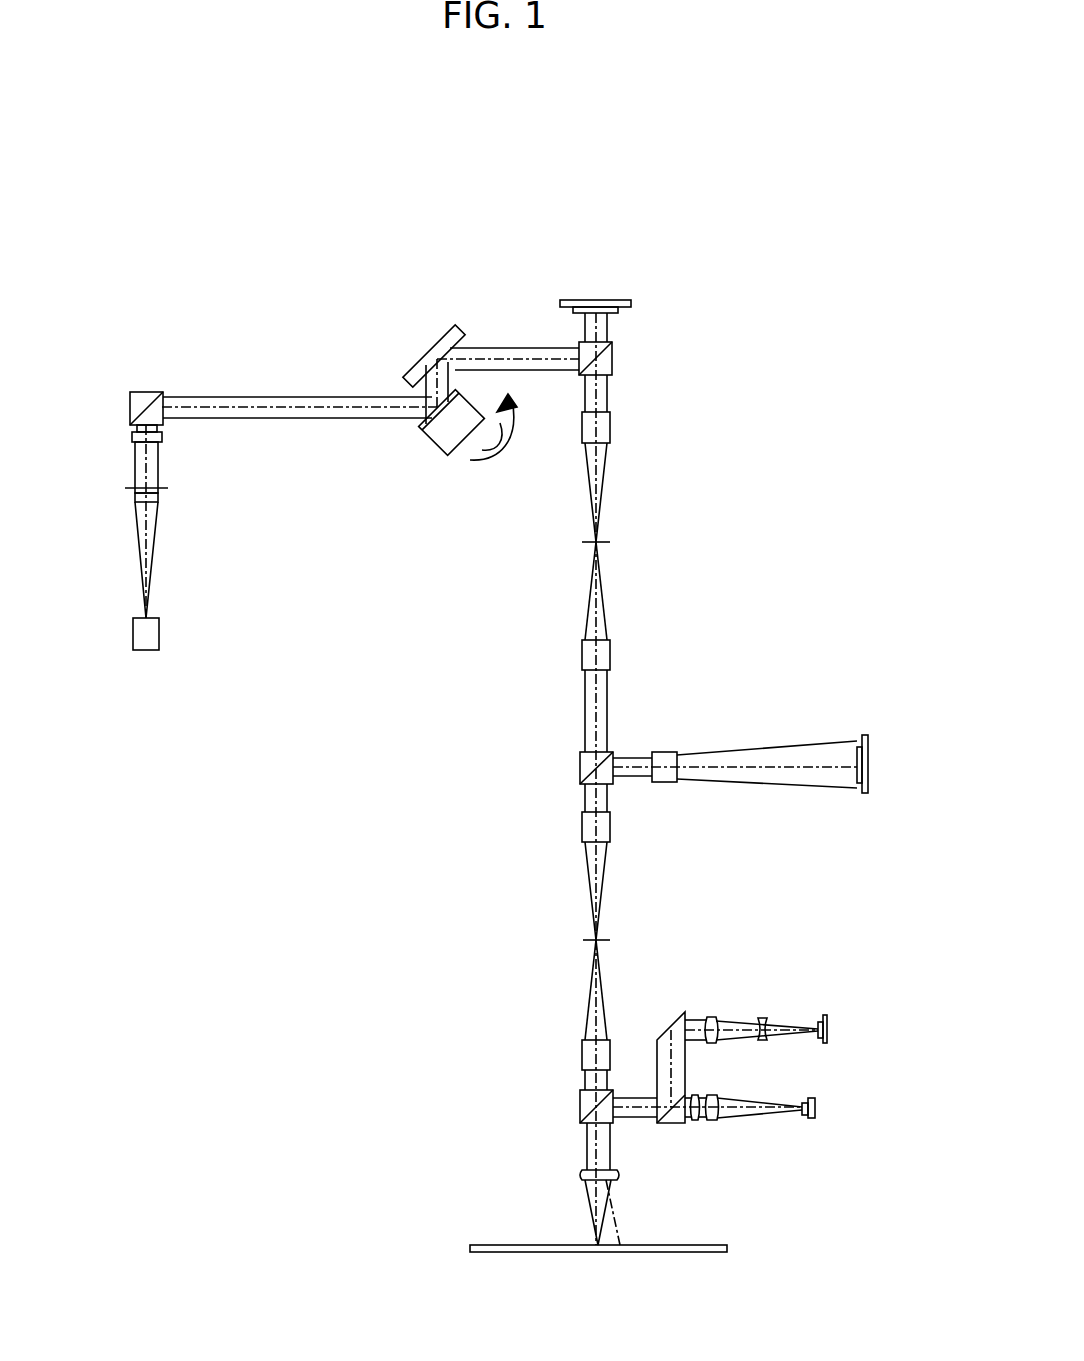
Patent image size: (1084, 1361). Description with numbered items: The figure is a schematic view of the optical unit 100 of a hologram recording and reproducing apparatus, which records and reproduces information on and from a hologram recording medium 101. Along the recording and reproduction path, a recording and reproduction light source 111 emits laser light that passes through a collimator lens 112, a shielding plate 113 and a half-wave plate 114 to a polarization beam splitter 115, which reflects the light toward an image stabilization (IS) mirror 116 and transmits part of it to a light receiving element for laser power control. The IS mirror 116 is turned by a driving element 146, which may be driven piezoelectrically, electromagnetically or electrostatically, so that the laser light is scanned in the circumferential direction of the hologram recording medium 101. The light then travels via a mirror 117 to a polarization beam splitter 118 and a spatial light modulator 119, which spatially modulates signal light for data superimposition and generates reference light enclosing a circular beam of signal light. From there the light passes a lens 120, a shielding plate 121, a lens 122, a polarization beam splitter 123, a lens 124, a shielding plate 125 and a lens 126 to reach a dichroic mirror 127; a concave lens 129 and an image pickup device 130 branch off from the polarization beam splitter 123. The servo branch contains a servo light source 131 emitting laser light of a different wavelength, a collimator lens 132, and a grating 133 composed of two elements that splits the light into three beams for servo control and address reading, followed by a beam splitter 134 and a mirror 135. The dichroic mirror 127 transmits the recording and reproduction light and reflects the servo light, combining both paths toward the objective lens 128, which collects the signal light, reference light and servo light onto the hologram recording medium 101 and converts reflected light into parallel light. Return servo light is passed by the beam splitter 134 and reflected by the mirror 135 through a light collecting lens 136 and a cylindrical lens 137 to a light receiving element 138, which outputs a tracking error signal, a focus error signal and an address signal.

The optical unit 100 is at (494, 205).
The hologram recording medium 101 is at (727, 1248).
The recording and reproduction light source 111 is at (133, 634).
The collimator lens 112 is at (160, 497).
The shielding plate 113 is at (128, 488).
The half-wave plate 114 is at (132, 437).
The polarization beam splitter 115 is at (152, 392).
The image stabilization (IS) mirror 116 is at (425, 428).
The mirror 117 is at (425, 338).
The polarization beam splitter 118 is at (612, 358).
The spatial light modulator 119 is at (618, 305).
The lens 120 is at (612, 427).
The shielding plate 121 is at (610, 542).
The lens 122 is at (612, 655).
The polarization beam splitter 123 is at (613, 752).
The lens 124 is at (612, 830).
The shielding plate 125 is at (610, 940).
The lens 126 is at (582, 1050).
The dichroic mirror 127 is at (580, 1106).
The objective lens 128 is at (582, 1174).
The concave lens 129 is at (670, 782).
The image pickup device 130 is at (868, 764).
The servo light source 131 is at (816, 1108).
The collimator lens 132 is at (716, 1122).
The grating 133 is at (697, 1122).
The beam splitter 134 is at (676, 1124).
The mirror 135 is at (665, 1102).
The light collecting lens 136 is at (712, 1017).
The cylindrical lens 137 is at (762, 1017).
The light receiving element 138 is at (828, 1028).
The driving element 146 is at (440, 450).